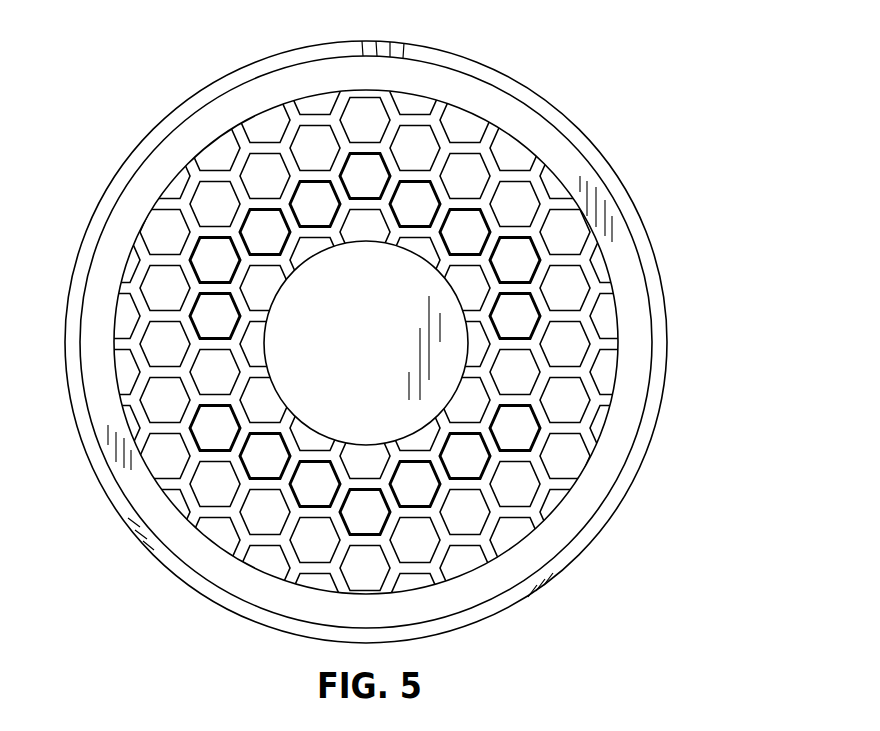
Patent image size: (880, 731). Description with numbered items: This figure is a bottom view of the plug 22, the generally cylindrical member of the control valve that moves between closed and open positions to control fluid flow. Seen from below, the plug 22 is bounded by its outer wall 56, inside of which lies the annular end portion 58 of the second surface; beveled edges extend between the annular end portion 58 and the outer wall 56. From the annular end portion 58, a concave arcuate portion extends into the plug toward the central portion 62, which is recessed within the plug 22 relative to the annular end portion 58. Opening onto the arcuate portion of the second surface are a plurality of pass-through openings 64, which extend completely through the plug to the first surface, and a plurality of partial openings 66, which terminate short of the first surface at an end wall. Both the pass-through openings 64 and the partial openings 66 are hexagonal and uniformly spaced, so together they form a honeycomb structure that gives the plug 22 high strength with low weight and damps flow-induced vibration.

The plug 22 is at (133, 85).
The outer wall 56 is at (667, 377).
The annular end portion 58 is at (622, 268).
The central portion 62 is at (380, 357).
The pass-through openings 64 is at (462, 238).
The partial openings 66 is at (475, 470).